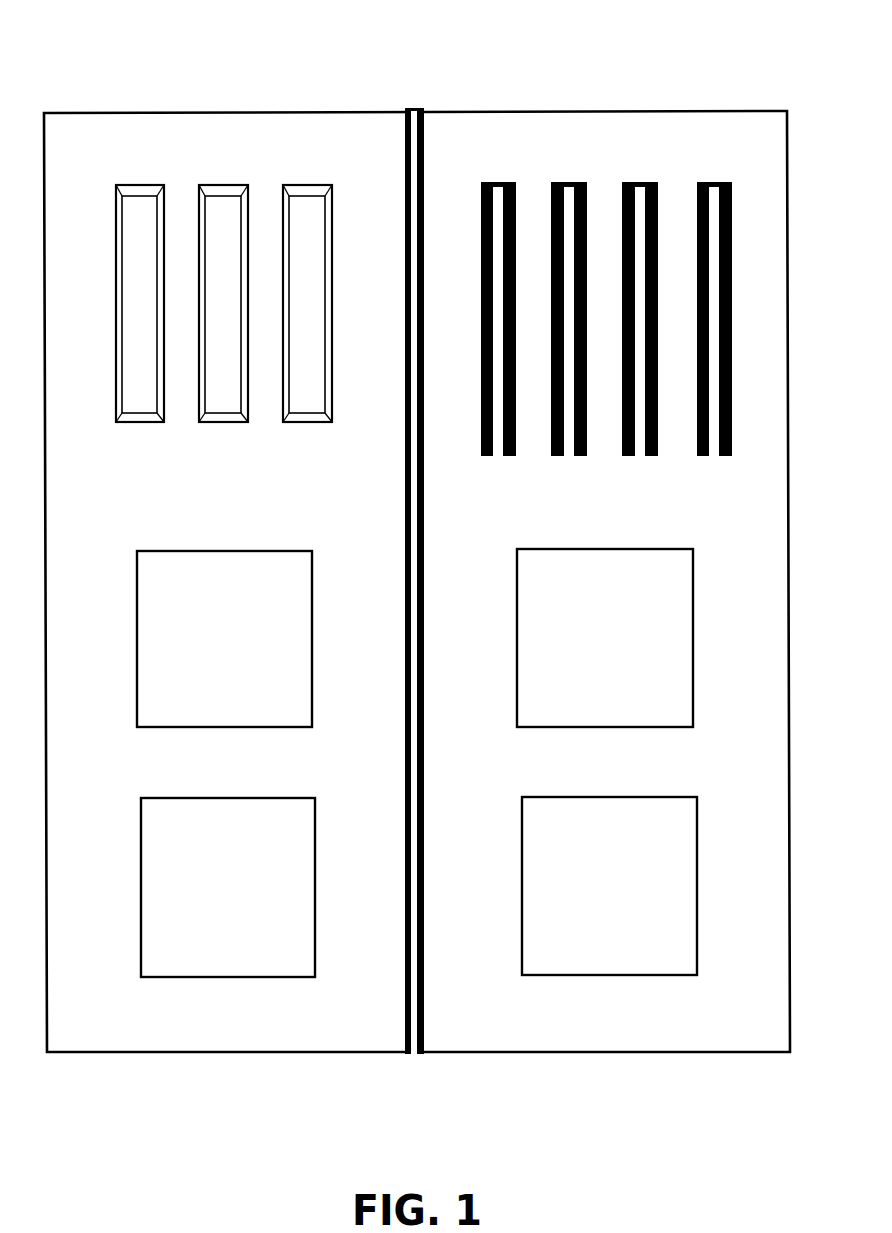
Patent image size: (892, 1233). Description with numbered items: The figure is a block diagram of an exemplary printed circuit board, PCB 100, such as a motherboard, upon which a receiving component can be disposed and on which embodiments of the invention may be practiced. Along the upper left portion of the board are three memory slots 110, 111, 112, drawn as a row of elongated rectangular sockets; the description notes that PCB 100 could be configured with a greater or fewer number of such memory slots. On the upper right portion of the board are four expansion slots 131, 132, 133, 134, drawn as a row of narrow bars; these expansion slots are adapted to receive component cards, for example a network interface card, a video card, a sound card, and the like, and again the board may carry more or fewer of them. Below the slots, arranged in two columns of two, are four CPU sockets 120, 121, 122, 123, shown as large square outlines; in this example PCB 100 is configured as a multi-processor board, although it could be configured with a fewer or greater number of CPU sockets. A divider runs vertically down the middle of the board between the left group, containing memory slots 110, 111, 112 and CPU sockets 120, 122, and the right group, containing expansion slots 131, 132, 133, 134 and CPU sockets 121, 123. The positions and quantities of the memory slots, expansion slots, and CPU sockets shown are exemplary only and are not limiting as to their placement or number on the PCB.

The PCB 100 is at (437, 50).
The memory slot 110 is at (137, 423).
The memory slot 111 is at (222, 423).
The memory slot 112 is at (306, 423).
The CPU socket 120 is at (203, 651).
The CPU socket 121 is at (583, 651).
The CPU socket 122 is at (208, 897).
The CPU socket 123 is at (588, 897).
The expansion slot 131 is at (498, 457).
The expansion slot 132 is at (568, 457).
The expansion slot 133 is at (640, 457).
The expansion slot 134 is at (714, 457).